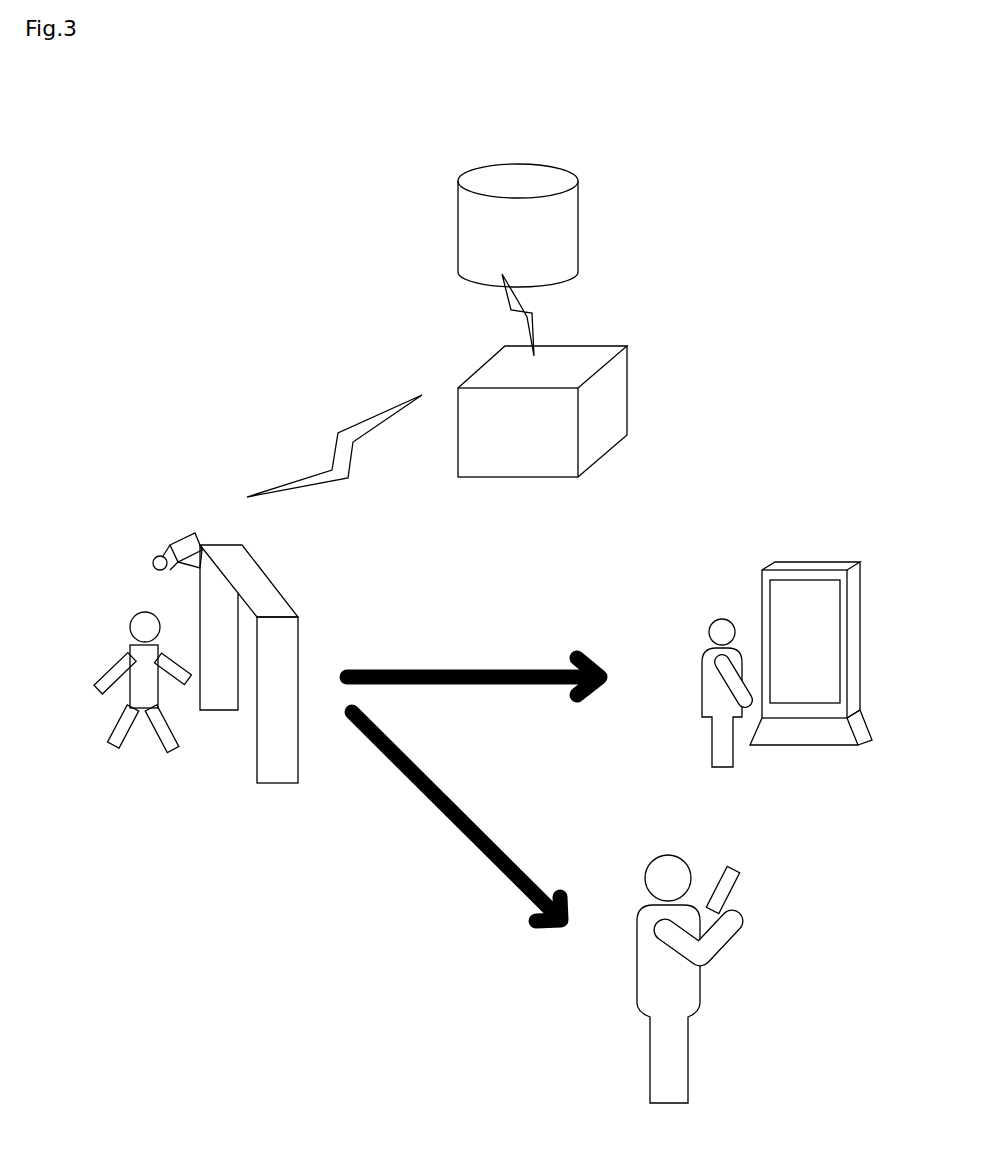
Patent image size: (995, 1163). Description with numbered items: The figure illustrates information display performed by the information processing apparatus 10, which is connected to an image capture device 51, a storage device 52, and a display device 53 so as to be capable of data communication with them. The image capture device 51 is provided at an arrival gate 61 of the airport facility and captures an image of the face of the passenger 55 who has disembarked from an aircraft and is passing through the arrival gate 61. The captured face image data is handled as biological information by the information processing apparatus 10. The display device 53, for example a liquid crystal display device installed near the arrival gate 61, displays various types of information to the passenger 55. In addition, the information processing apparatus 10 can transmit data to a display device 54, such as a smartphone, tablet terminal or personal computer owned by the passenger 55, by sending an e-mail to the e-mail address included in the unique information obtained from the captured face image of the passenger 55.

The information processing apparatus 10 is at (482, 378).
The image capture device 51 is at (184, 535).
The storage device 52 is at (498, 182).
The display device 53 is at (835, 558).
The display device 54 is at (728, 878).
The passenger 55 is at (140, 617).
The arrival gate 61 is at (262, 590).